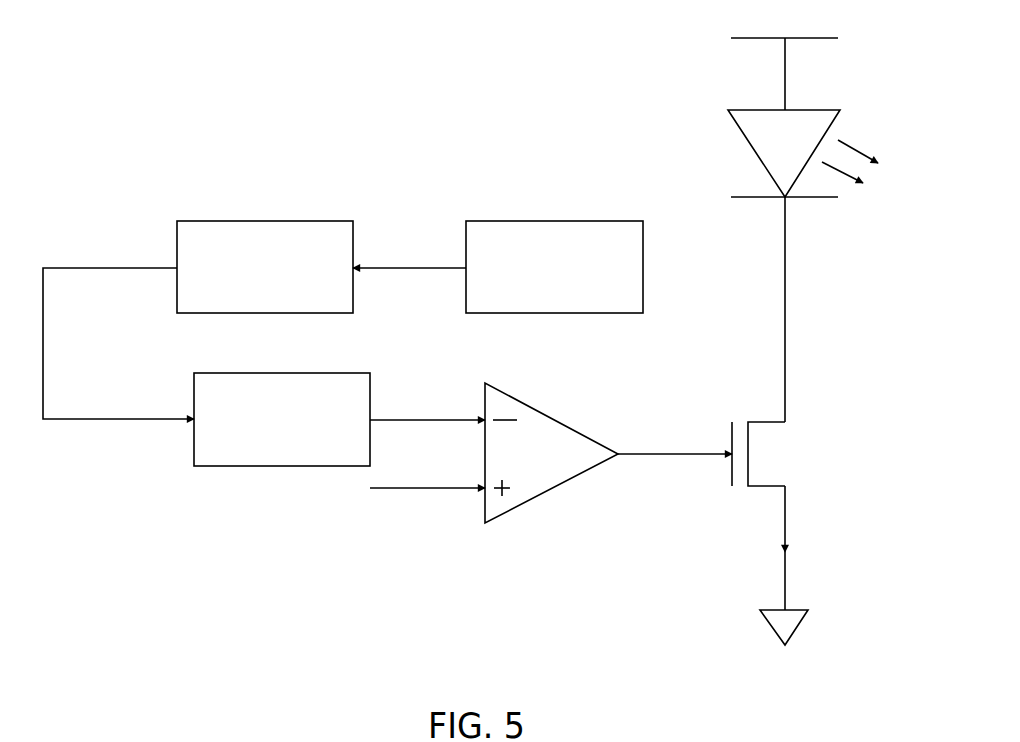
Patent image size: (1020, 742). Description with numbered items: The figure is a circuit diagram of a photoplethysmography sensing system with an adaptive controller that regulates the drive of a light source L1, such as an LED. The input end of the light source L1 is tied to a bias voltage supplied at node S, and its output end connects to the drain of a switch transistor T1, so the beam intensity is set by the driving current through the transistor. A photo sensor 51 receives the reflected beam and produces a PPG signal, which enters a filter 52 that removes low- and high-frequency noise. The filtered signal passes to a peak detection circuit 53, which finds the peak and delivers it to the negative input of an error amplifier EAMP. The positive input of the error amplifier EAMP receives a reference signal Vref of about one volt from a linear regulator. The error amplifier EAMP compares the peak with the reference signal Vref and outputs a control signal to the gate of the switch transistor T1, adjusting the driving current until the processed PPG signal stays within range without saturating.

The photo sensor 51 is at (554, 267).
The filter 52 is at (265, 267).
The peak detection circuit 53 is at (282, 419).
The light source L1 is at (750, 143).
The switch transistor T1 is at (788, 452).
The error amplifier EAMP is at (572, 482).
The supply voltage node S is at (855, 32).
The reference signal Vref is at (394, 497).